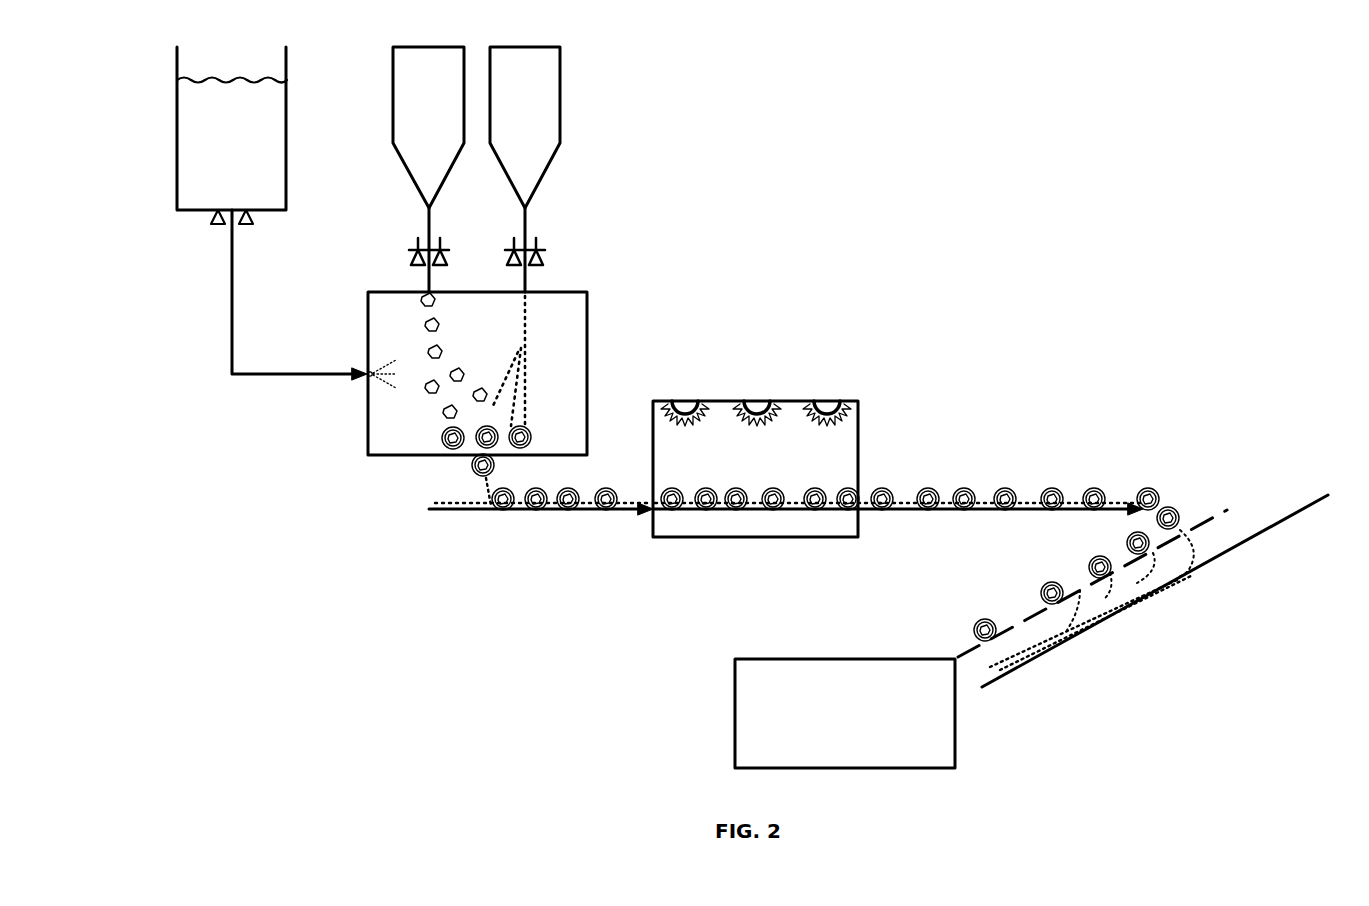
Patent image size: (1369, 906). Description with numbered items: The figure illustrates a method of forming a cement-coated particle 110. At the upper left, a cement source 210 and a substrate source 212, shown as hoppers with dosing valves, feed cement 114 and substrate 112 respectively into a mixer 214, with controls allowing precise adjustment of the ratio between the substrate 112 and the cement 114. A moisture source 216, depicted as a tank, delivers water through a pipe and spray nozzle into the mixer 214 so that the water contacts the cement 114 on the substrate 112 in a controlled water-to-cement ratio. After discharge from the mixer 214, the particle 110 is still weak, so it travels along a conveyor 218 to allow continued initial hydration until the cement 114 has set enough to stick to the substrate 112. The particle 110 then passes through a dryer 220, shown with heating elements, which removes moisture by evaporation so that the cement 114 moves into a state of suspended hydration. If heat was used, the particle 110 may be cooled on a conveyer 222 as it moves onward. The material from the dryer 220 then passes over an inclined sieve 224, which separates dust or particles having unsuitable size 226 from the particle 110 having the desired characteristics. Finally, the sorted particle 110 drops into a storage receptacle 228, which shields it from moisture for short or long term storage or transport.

The particle 110 is at (560, 500).
The substrate 112 is at (428, 127).
The cement 114 is at (525, 127).
The cement source 210 is at (546, 151).
The substrate source 212 is at (445, 151).
The mixer 214 is at (592, 303).
The moisture source 216 is at (288, 98).
The conveyor 218 is at (440, 510).
The dryer 220 is at (860, 447).
The conveyer 222 is at (1027, 507).
The sieve 224 is at (1252, 497).
The particles having unsuitable size 226 is at (1137, 588).
The storage receptacle 228 is at (733, 702).